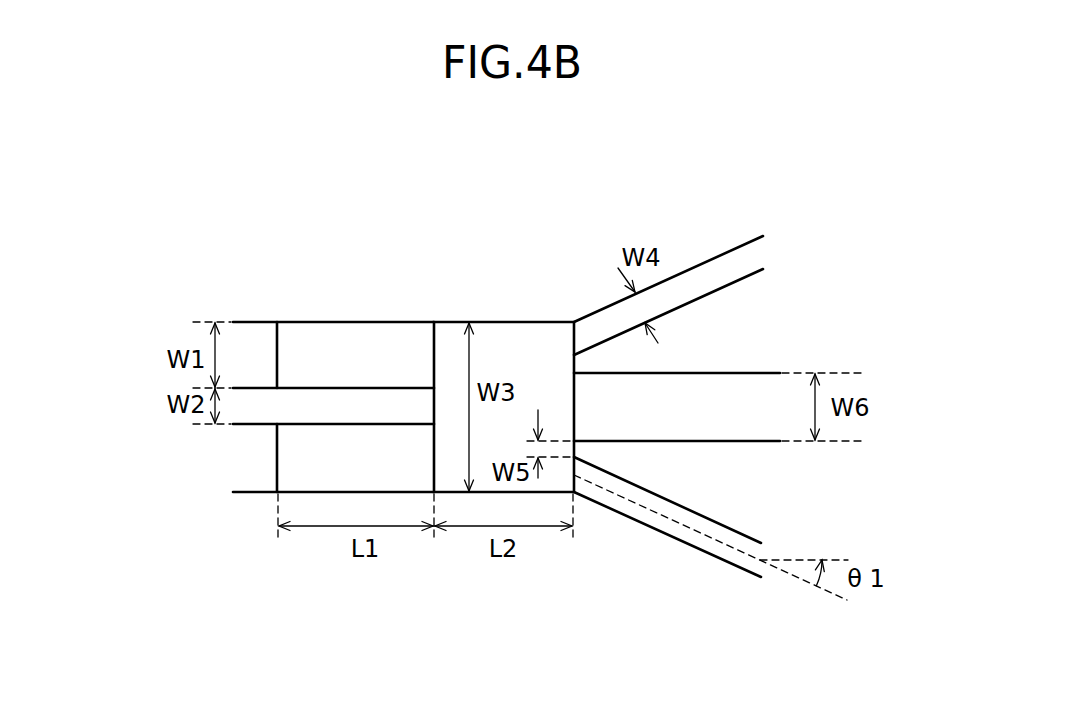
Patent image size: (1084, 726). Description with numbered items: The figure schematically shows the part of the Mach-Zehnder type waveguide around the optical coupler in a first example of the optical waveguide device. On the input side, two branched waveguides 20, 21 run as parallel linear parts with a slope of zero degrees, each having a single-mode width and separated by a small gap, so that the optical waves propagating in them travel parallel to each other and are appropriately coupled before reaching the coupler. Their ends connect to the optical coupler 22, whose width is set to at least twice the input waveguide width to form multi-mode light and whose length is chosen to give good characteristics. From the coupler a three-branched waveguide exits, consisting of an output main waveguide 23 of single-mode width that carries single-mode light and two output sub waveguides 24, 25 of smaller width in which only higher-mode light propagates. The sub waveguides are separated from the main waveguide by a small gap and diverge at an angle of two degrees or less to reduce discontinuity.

The branched waveguide 20 is at (355, 320).
The branched waveguide 21 is at (337, 492).
The optical coupler 22 is at (526, 320).
The output main waveguide 23 is at (710, 413).
The output sub waveguide 24 is at (708, 278).
The output sub waveguide 25 is at (692, 535).